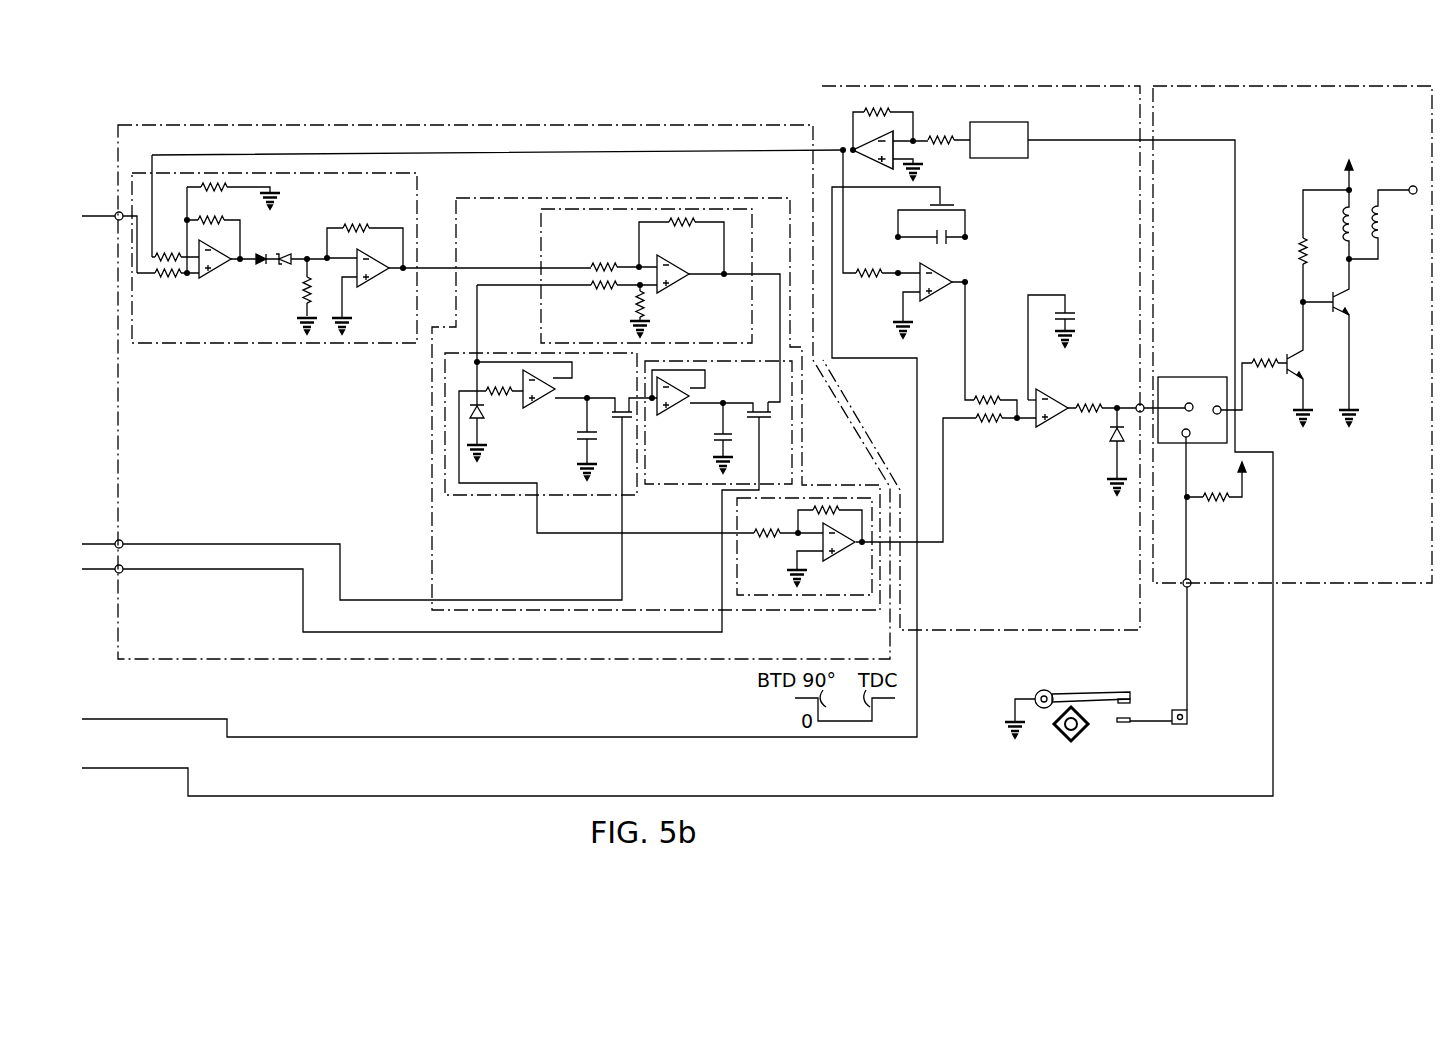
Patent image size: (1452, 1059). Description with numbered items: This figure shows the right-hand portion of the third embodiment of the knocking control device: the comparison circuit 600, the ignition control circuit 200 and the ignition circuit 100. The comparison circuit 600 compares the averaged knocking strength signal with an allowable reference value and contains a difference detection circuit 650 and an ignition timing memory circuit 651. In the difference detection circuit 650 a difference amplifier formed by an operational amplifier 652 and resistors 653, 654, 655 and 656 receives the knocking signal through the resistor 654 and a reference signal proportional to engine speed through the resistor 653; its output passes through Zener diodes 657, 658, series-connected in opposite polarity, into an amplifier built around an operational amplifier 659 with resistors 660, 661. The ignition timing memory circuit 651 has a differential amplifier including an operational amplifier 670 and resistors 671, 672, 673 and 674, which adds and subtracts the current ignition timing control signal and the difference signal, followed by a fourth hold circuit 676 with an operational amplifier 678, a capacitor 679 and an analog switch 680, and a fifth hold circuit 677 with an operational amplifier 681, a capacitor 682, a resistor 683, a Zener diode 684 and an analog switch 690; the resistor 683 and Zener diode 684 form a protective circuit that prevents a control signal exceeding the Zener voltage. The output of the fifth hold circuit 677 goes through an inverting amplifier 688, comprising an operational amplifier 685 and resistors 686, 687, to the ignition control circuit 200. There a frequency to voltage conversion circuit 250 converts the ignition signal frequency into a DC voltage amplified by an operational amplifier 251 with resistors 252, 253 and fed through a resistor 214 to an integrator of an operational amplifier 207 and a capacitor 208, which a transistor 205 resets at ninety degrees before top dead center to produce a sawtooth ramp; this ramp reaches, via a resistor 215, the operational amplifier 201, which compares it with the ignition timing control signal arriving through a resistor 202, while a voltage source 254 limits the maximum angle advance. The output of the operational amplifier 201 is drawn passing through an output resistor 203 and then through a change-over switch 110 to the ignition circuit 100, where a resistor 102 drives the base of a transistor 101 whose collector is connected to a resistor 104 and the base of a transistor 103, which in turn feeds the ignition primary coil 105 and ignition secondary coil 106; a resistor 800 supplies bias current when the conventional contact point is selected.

The ignition circuit 100 is at (1262, 86).
The transistor 101 is at (1300, 370).
The resistor 102 is at (1262, 362).
The transistor 103 is at (1352, 299).
The resistor 104 is at (1297, 253).
The ignition primary coil 105 is at (1340, 217).
The ignition secondary coil 106 is at (1380, 240).
The change-over switch 110 is at (1195, 377).
The ignition control circuit 200 is at (988, 86).
The operational amplifier 201 is at (1053, 420).
The resistor 202 is at (1000, 422).
The resistor 203 is at (1090, 405).
The transistor 205 is at (957, 204).
The operational amplifier 207 is at (948, 279).
The capacitor 208 is at (950, 238).
The resistor 214 is at (868, 271).
The resistor 215 is at (985, 398).
The frequency to voltage conversion circuit 250 is at (1030, 145).
The operational amplifier 251 is at (868, 142).
The resistor 252 is at (940, 138).
The resistor 253 is at (880, 110).
The voltage source 254 is at (1068, 312).
The comparison circuit 600 is at (580, 124).
The difference detection circuit 650 is at (420, 183).
The ignition timing memory circuit 651 is at (590, 197).
The operational amplifier 652 is at (222, 263).
The resistor 653 is at (163, 263).
The resistor 654 is at (190, 279).
The resistor 655 is at (223, 217).
The resistor 656 is at (212, 185).
The Zener diode 657 is at (260, 263).
The Zener diode 658 is at (289, 257).
The operational amplifier 659 is at (370, 283).
The resistor 660 is at (306, 296).
The resistor 661 is at (352, 226).
The operational amplifier 670 is at (677, 277).
The resistor 671 is at (607, 260).
The resistor 672 is at (690, 215).
The resistor 673 is at (613, 289).
The resistor 674 is at (650, 313).
The fourth hold circuit 676 is at (697, 485).
The fifth hold circuit 677 is at (500, 496).
The operational amplifier 678 is at (680, 402).
The capacitor 679 is at (713, 443).
The analog switch 680 is at (753, 409).
The operational amplifier 681 is at (538, 405).
The capacitor 682 is at (583, 440).
The resistor 683 is at (477, 362).
The Zener diode 684 is at (476, 416).
The operational amplifier 685 is at (847, 550).
The resistor 686 is at (770, 547).
The resistor 687 is at (833, 507).
The inverting amplifier 688 is at (810, 597).
The analog switch 690 is at (620, 408).
The resistor 800 is at (1215, 500).